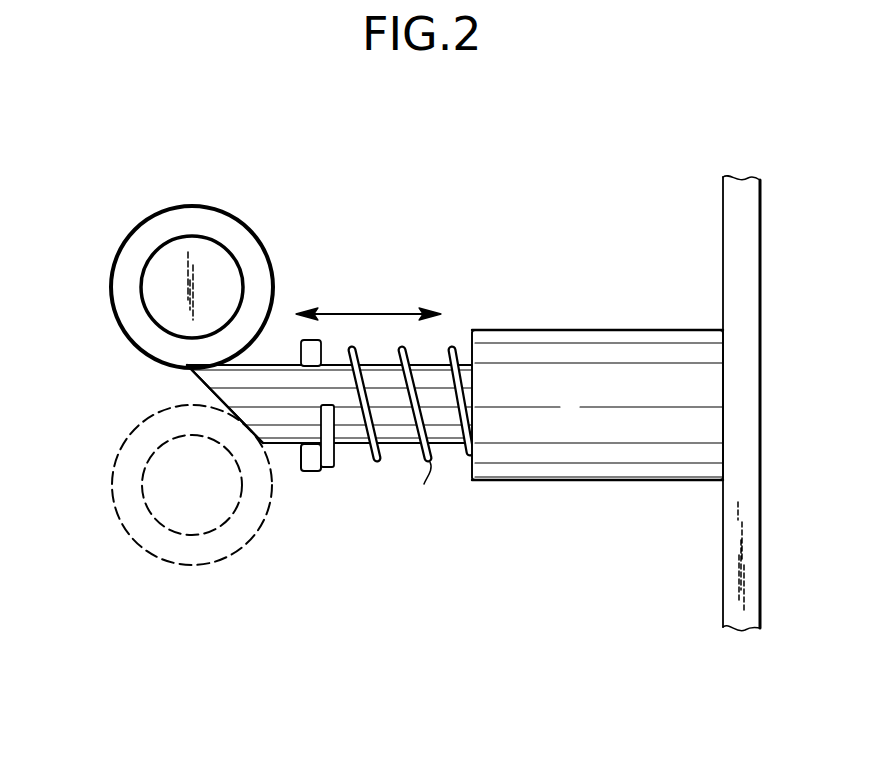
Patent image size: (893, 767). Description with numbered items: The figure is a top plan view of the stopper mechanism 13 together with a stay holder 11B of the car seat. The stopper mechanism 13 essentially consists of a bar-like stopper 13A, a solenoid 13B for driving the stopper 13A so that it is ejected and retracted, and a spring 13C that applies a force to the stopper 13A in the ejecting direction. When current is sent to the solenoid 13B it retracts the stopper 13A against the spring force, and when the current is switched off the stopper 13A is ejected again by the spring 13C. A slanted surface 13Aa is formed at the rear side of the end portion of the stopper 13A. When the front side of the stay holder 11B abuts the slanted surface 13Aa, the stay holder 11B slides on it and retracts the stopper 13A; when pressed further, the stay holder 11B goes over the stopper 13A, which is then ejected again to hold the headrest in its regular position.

The stay holder 11B is at (192, 207).
The stopper mechanism 13 is at (601, 322).
The stopper 13A is at (290, 432).
The slanted surface 13Aa is at (209, 384).
The solenoid 13B is at (595, 453).
The spring 13C is at (428, 466).